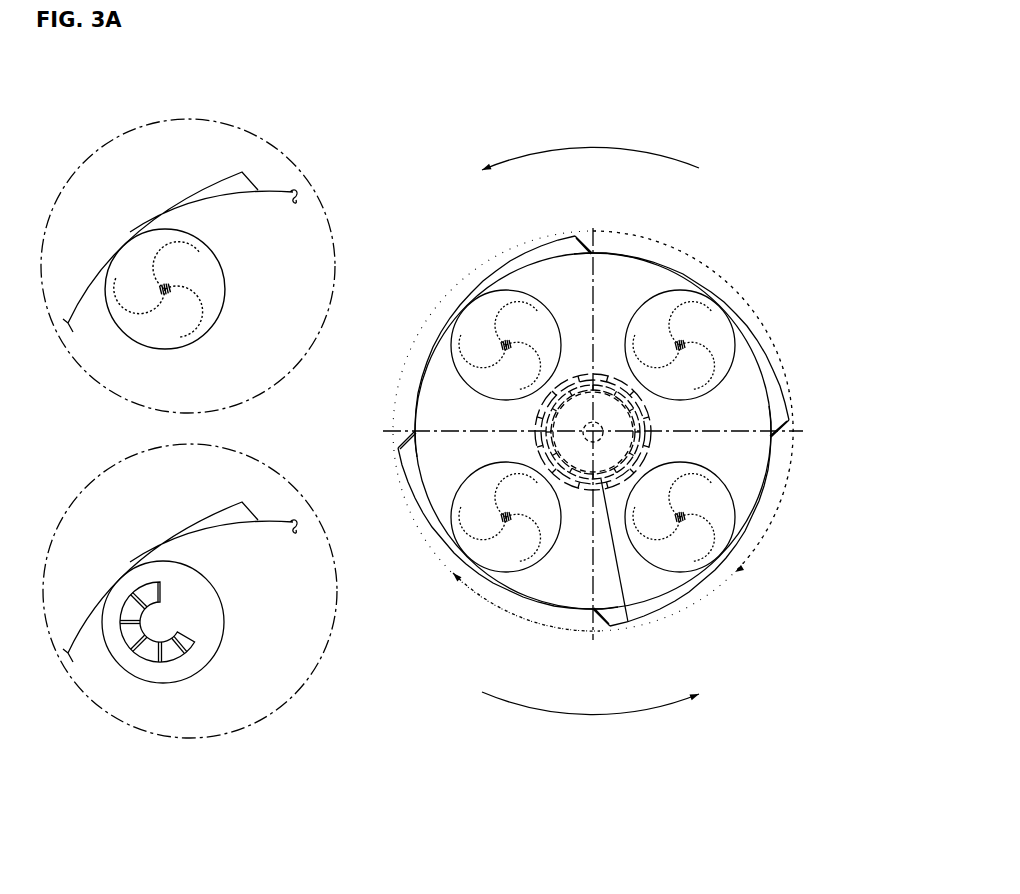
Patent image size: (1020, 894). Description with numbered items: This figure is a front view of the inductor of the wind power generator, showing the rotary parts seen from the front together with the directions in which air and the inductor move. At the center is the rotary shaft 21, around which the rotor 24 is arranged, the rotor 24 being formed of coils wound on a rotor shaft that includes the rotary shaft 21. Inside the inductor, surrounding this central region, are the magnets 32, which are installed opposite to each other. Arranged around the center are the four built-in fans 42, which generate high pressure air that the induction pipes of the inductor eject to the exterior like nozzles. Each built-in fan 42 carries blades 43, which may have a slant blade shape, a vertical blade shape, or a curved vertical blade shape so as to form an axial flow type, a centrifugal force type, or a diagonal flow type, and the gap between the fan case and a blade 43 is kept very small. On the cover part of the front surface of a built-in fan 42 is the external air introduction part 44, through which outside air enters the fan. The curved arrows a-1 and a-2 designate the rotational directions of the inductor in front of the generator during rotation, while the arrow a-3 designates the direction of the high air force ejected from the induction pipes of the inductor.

The built-in fan 42 is at (502, 342).
The magnets 32 is at (536, 410).
The rotor 24 is at (628, 456).
The rotary shaft 21 is at (597, 440).
The blade 43 is at (228, 289).
The external air introduction part 44 is at (194, 629).
The rotational direction a-1 is at (600, 143).
The rotational direction a-2 is at (590, 719).
The direction of high air force a-3 is at (744, 284).